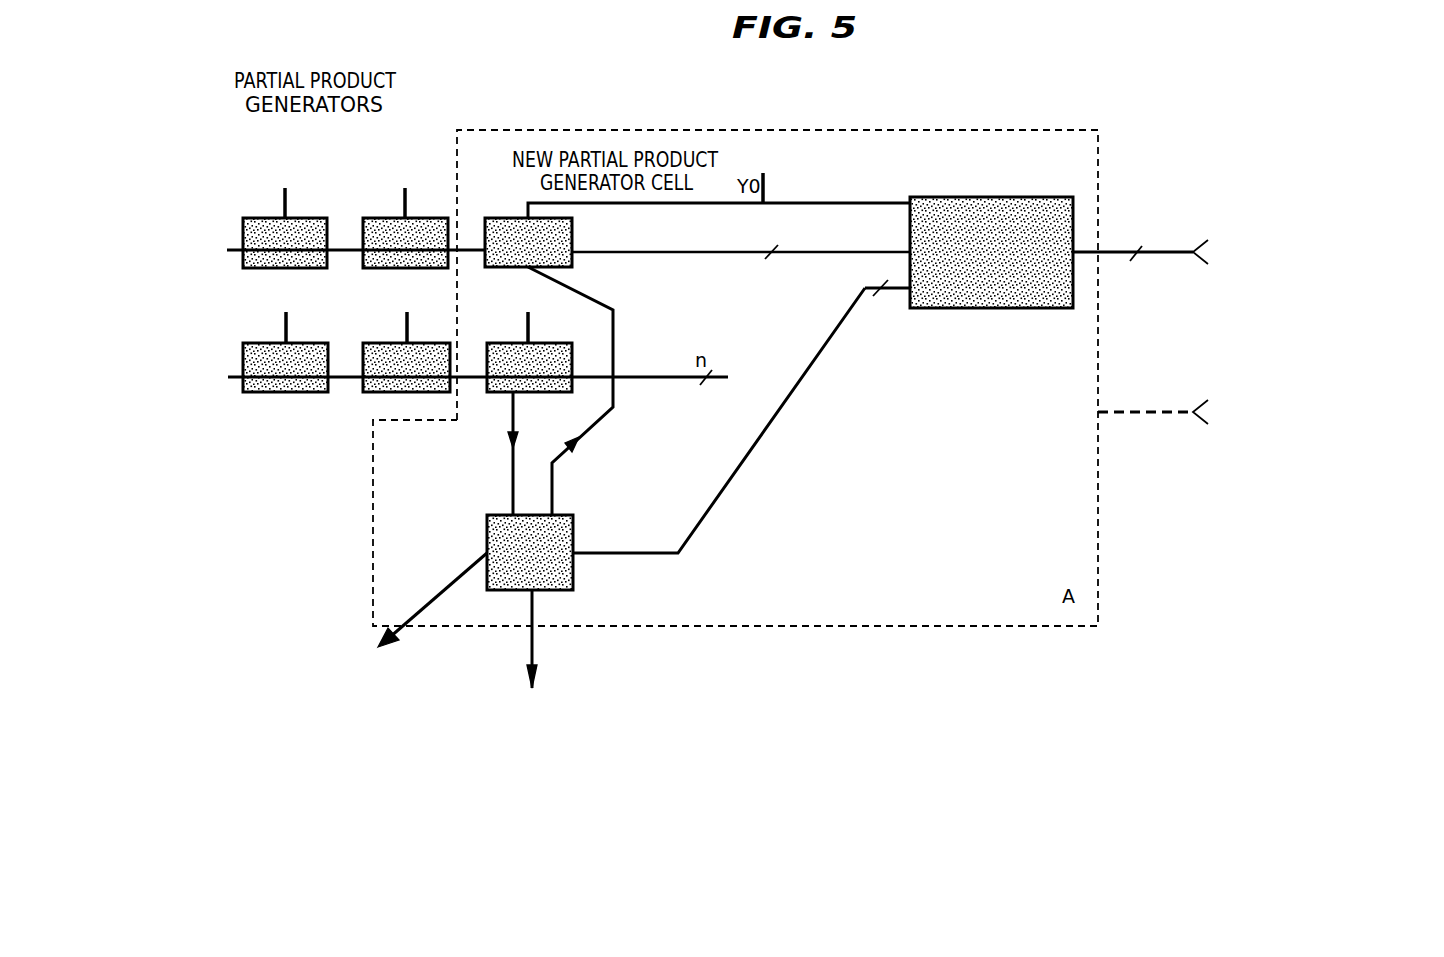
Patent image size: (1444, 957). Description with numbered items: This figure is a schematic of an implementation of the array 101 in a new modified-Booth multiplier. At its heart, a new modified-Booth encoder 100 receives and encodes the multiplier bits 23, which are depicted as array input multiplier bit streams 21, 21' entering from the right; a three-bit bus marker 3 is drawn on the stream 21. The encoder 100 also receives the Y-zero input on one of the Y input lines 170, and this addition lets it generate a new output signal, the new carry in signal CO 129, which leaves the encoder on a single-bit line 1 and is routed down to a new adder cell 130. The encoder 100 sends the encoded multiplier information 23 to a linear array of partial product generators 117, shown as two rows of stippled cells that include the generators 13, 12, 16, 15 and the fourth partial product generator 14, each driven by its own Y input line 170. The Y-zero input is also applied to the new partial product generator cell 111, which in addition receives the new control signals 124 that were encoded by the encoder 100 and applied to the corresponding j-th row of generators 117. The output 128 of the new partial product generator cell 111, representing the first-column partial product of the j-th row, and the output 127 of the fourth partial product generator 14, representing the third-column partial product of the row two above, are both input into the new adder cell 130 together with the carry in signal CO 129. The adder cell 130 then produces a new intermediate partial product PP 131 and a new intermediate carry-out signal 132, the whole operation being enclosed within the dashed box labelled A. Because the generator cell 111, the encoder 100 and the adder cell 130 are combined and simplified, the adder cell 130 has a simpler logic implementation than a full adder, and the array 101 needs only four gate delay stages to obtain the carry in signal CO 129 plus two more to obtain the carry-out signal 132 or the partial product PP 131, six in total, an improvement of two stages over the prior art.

The array 101 is at (1015, 118).
The partial product generator 13 is at (243, 233).
The partial product generator 12 is at (365, 232).
The Y input line 170 is at (265, 188).
The new partial product generator cell 111 is at (503, 218).
The new control signals 124 is at (772, 258).
The new modified-Booth encoder 100 is at (955, 308).
The single bit line 1 is at (887, 300).
The array input multiplier bit stream 21 is at (1206, 234).
The 3-bit bus 3 is at (1135, 242).
The array input multiplier bit stream 21' is at (1230, 390).
The multiplier bits 23 is at (1338, 343).
The partial product generator 16 is at (278, 392).
The partial product generator 15 is at (413, 343).
The fourth partial product generator 14 is at (540, 343).
The linear array of partial product generators 117 is at (208, 327).
The output of new partial product generator cell 128 is at (618, 340).
The output of fourth partial product generator 127 is at (518, 420).
The new adder cell 130 is at (573, 572).
The new carry in signal CO 129 is at (647, 553).
The new intermediate carry-out Cout 132 is at (455, 580).
The new intermediate partial product PP 131 is at (530, 650).